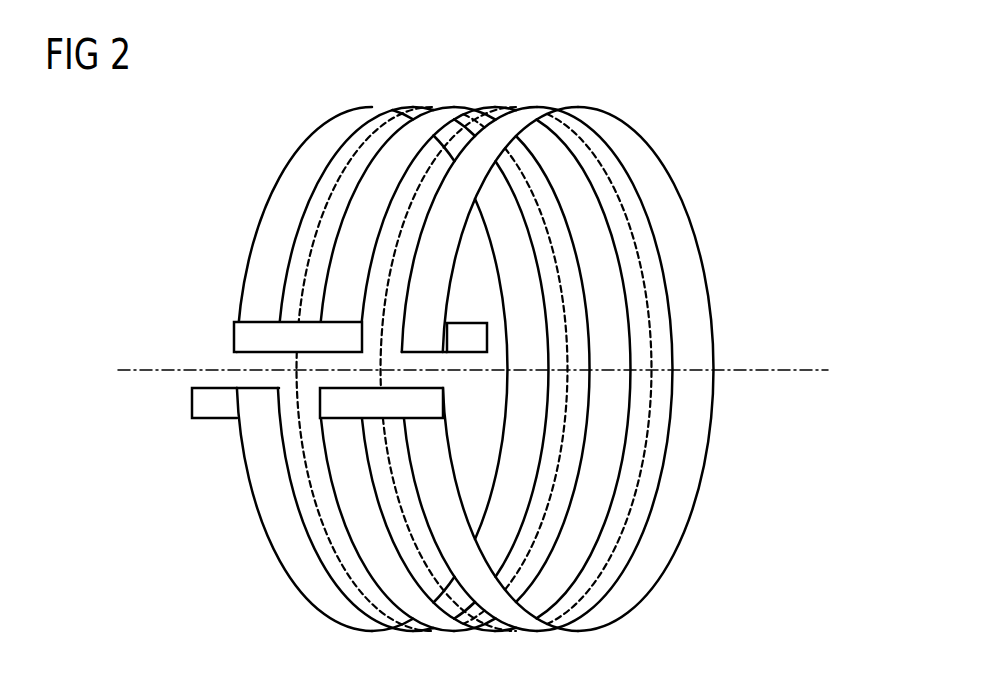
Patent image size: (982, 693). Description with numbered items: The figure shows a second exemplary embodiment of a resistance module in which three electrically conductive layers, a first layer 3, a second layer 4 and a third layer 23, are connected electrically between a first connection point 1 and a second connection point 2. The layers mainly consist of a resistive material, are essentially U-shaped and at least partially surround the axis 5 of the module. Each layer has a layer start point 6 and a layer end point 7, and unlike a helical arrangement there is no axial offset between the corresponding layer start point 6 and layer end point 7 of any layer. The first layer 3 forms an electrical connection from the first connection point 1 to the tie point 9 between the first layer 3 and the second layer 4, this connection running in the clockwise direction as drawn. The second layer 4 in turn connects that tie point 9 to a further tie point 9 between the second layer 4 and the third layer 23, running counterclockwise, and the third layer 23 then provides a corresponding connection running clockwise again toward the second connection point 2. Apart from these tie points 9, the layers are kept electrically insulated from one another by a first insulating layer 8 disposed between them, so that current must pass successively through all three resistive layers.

The first connection point 1 is at (487, 340).
The second connection point 2 is at (192, 403).
The first layer 3 is at (693, 222).
The second layer 4 is at (447, 108).
The axis 5 is at (803, 370).
The layer start point 6 is at (264, 322).
The layer end point 7 is at (343, 322).
The first insulating layer 8 is at (642, 278).
The tie point 9 is at (233, 337).
The third layer 23 is at (360, 108).